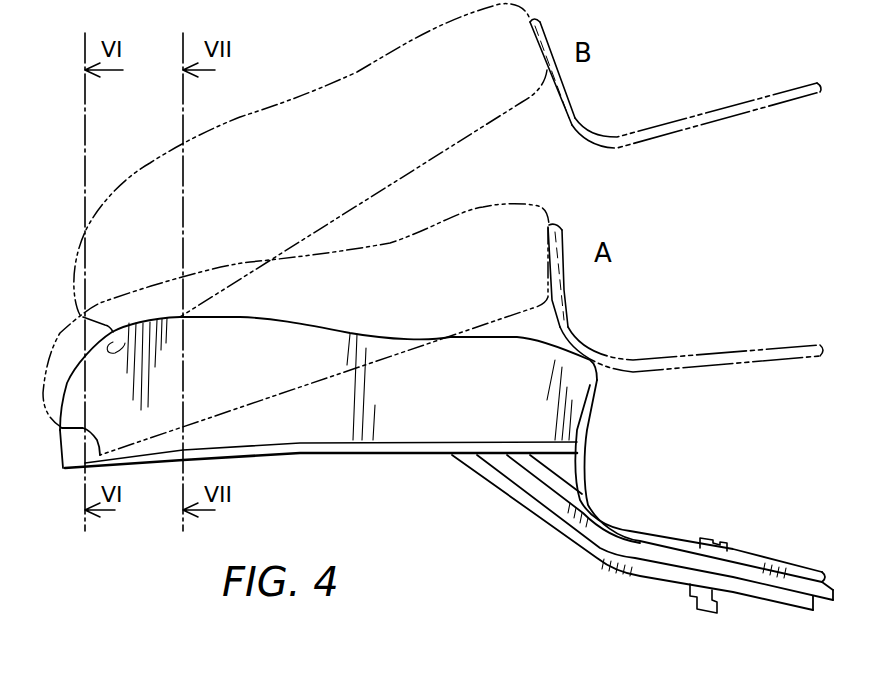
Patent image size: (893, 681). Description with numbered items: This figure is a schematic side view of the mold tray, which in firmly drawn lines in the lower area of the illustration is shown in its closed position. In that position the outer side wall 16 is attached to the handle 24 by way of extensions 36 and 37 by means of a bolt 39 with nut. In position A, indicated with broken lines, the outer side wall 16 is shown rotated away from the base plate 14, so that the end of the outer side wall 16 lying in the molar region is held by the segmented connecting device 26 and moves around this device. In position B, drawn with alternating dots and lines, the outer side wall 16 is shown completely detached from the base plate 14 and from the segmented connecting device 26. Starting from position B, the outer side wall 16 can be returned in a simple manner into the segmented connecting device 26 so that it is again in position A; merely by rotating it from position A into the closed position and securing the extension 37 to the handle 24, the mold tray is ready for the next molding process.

The base plate 14 is at (383, 447).
The outer side wall 16 is at (320, 413).
The handle 24 is at (832, 588).
The segmented connecting device 26 is at (64, 453).
The extension 36 is at (510, 488).
The extension 37 is at (580, 470).
The bolt 39 is at (712, 540).